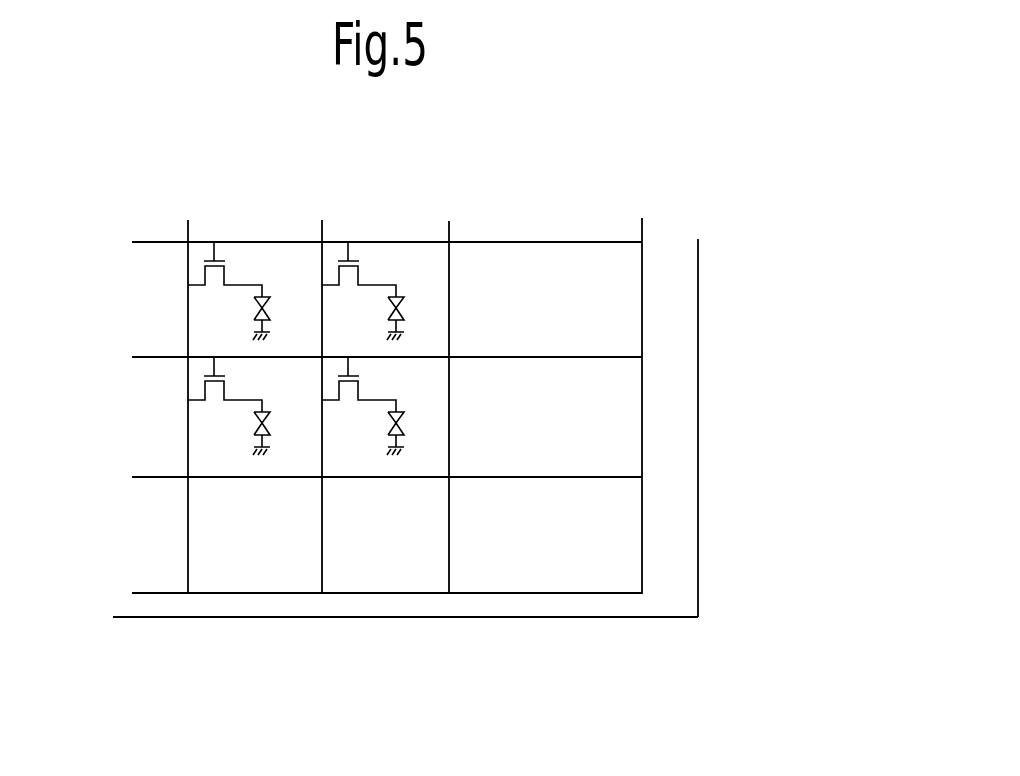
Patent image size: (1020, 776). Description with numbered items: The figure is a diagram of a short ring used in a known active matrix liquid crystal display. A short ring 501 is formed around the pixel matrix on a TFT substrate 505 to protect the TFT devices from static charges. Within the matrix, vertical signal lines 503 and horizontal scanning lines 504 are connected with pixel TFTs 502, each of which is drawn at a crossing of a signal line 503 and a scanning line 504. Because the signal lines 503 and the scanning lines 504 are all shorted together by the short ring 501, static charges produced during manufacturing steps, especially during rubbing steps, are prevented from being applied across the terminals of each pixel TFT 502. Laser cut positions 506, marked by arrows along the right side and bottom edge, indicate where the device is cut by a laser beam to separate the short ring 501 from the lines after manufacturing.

The short ring 501 is at (630, 205).
The pixel TFT 502 is at (233, 263).
The signal line 503 is at (332, 381).
The scanning line 504 is at (336, 373).
The TFT substrate 505 is at (360, 603).
The laser cut position 506 is at (747, 558).